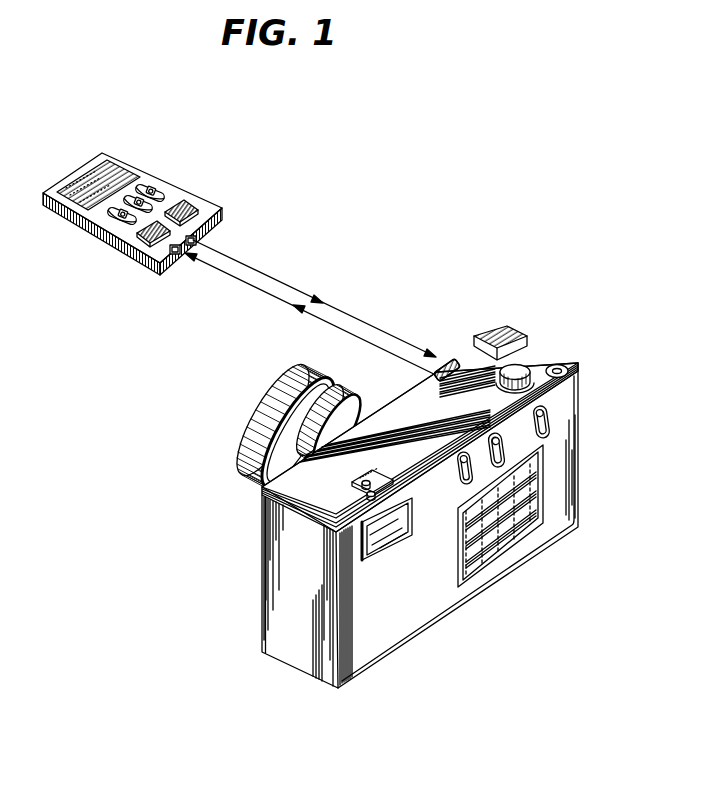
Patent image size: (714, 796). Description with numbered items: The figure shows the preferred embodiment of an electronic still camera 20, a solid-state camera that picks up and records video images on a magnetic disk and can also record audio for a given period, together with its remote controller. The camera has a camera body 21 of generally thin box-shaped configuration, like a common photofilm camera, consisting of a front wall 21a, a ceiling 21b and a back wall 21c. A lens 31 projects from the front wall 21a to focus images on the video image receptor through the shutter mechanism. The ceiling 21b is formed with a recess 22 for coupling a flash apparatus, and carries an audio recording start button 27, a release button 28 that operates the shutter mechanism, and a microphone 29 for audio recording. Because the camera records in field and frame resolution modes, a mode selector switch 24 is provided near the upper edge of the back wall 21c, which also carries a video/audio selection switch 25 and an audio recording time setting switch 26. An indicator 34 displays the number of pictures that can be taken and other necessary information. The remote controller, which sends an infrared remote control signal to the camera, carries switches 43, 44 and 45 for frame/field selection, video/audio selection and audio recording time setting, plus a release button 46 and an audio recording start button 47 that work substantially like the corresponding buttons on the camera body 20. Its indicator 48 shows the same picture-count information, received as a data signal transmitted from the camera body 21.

The electronic still camera 20 is at (372, 684).
The camera body 21 is at (395, 652).
The front wall 21a is at (408, 400).
The ceiling 21b is at (467, 363).
The back wall 21c is at (550, 524).
The recess 22 is at (357, 483).
The mode selector switch 24 is at (546, 436).
The video/audio selection switch 25 is at (484, 438).
The audio recording time setting switch 26 is at (457, 487).
The audio recording start button 27 is at (570, 367).
The release button 28 is at (528, 367).
The microphone 29 is at (505, 328).
The lens 31 is at (266, 383).
The indicator 34 is at (502, 545).
The switch 43 is at (152, 188).
The switch 44 is at (140, 199).
The switch 45 is at (120, 219).
The release button 46 is at (187, 201).
The audio recording start button 47 is at (138, 236).
The indicator 48 is at (86, 182).